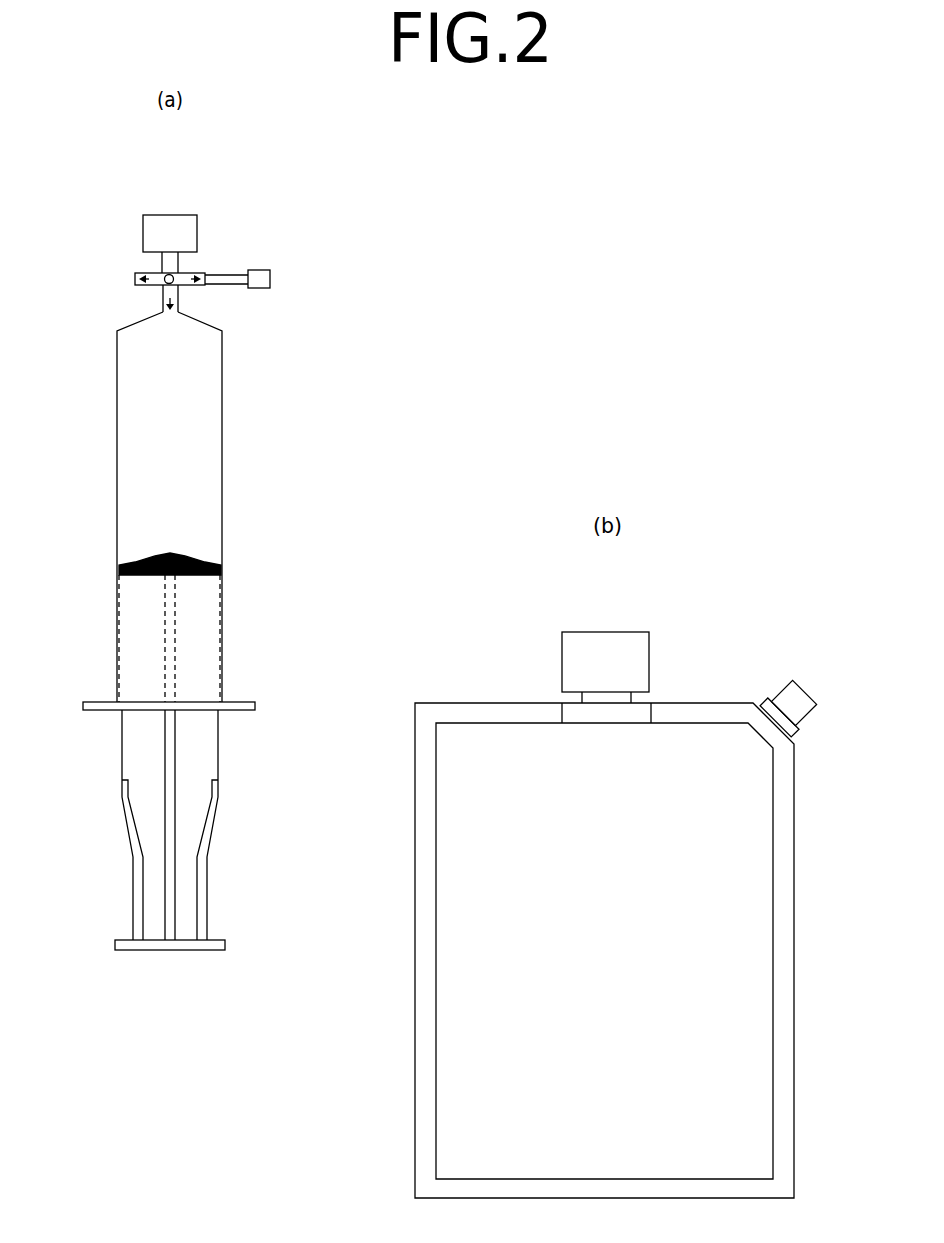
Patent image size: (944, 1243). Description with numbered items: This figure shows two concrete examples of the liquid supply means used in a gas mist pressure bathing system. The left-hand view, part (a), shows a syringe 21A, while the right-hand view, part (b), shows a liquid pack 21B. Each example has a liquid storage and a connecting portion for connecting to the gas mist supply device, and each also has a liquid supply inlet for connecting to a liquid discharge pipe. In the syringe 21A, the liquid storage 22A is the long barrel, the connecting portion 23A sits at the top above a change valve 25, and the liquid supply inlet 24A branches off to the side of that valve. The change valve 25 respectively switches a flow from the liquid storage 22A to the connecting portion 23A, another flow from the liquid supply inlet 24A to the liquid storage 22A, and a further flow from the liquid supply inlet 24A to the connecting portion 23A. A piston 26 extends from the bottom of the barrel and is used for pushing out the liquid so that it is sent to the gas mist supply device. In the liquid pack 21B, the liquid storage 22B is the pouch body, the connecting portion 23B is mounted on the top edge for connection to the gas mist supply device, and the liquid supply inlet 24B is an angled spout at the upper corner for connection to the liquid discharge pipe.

The syringe 21A is at (227, 206).
The liquid storage 22A is at (207, 447).
The connecting portion 23A is at (153, 215).
The liquid supply inlet 24A is at (272, 275).
The change valve 25 is at (135, 278).
The piston 26 is at (207, 760).
The liquid pack 21B is at (733, 636).
The liquid storage 22B is at (762, 932).
The connecting portion 23B is at (579, 632).
The liquid supply inlet 24B is at (804, 689).